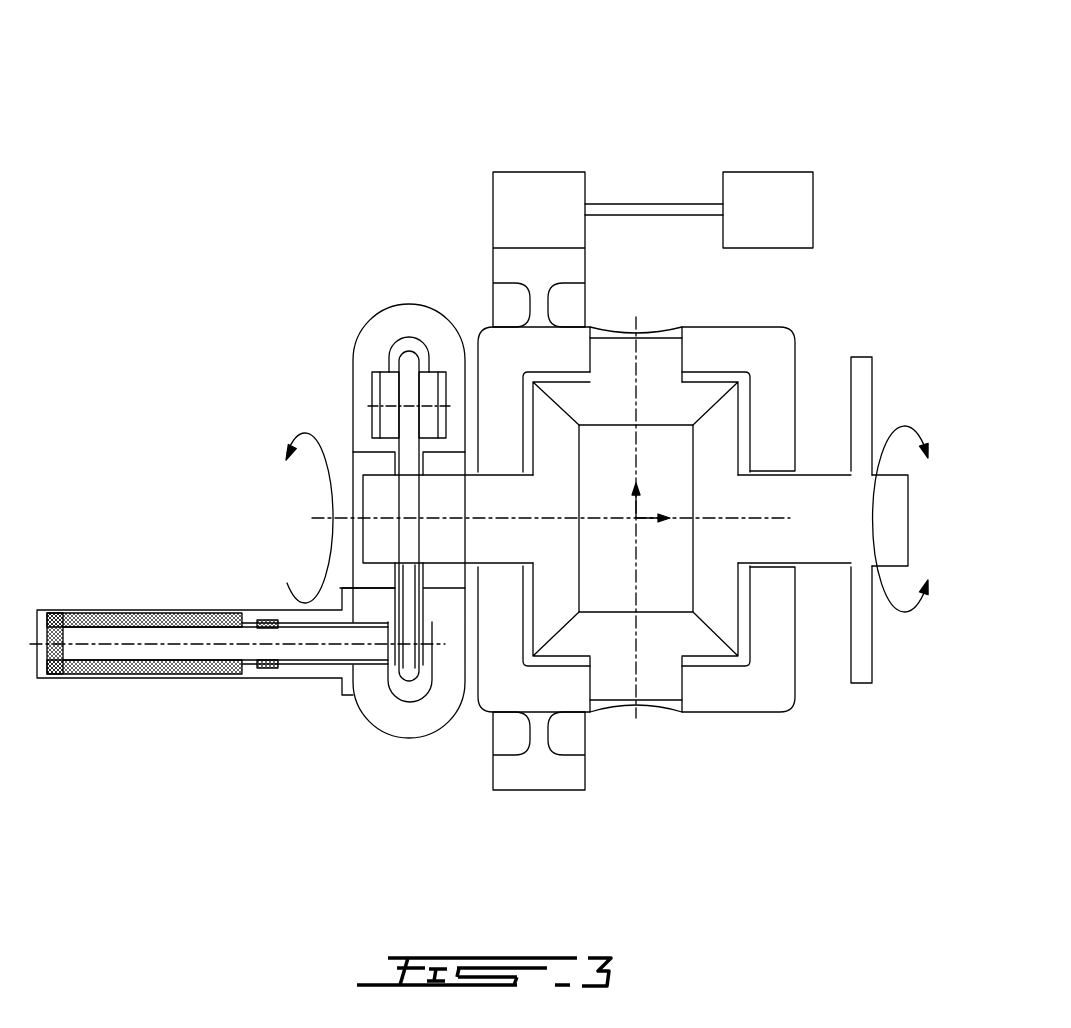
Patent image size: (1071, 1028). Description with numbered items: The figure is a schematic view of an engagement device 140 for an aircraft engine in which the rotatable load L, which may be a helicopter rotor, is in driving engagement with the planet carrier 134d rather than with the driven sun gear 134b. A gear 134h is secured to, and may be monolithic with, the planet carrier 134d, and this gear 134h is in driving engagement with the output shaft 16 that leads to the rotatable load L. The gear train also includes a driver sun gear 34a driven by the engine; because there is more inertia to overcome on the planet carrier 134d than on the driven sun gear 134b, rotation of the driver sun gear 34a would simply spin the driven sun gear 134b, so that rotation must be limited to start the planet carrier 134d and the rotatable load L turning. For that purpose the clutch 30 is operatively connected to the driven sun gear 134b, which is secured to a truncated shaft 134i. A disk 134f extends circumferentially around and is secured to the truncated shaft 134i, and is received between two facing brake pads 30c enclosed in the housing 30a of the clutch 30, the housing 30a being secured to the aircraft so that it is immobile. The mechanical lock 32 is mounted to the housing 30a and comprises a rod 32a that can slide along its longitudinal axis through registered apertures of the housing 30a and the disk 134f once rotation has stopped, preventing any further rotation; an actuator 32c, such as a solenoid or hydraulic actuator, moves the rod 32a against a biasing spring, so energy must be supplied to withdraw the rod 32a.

The engagement device 140 is at (900, 150).
The output shaft 16 is at (655, 202).
The rotatable load L is at (813, 218).
The clutch 30 is at (412, 285).
The housing 30a is at (413, 713).
The brake pads 30c is at (409, 398).
The mechanical lock 32 is at (128, 598).
The rod 32a is at (355, 653).
The actuator 32c is at (153, 680).
The driver sun gear 34a is at (717, 602).
The driven sun gear 134b is at (552, 605).
The planet carrier 134d is at (792, 333).
The disk 134f is at (407, 672).
The gear 134h is at (556, 792).
The truncated shaft 134i is at (363, 510).